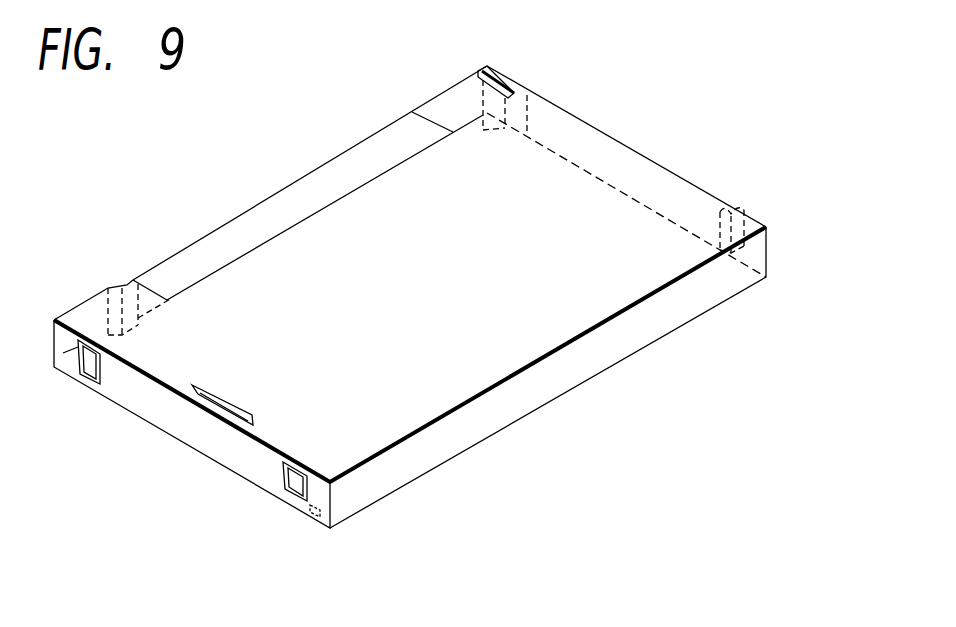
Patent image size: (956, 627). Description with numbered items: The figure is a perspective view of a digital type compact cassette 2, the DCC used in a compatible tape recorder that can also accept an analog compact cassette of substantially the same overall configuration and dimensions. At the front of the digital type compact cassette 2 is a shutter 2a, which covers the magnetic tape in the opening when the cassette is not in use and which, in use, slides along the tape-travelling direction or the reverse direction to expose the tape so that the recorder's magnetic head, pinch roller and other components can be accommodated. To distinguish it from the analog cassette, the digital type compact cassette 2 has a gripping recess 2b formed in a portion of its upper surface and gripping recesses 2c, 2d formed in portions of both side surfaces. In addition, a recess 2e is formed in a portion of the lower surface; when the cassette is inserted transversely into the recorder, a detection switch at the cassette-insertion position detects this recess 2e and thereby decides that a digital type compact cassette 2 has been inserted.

The digital type compact cassette 2 is at (630, 147).
The shutter 2a is at (268, 202).
The gripping recess 2b is at (213, 405).
The gripping recess 2c is at (500, 120).
The gripping recess 2d is at (730, 220).
The recess 2e is at (315, 517).